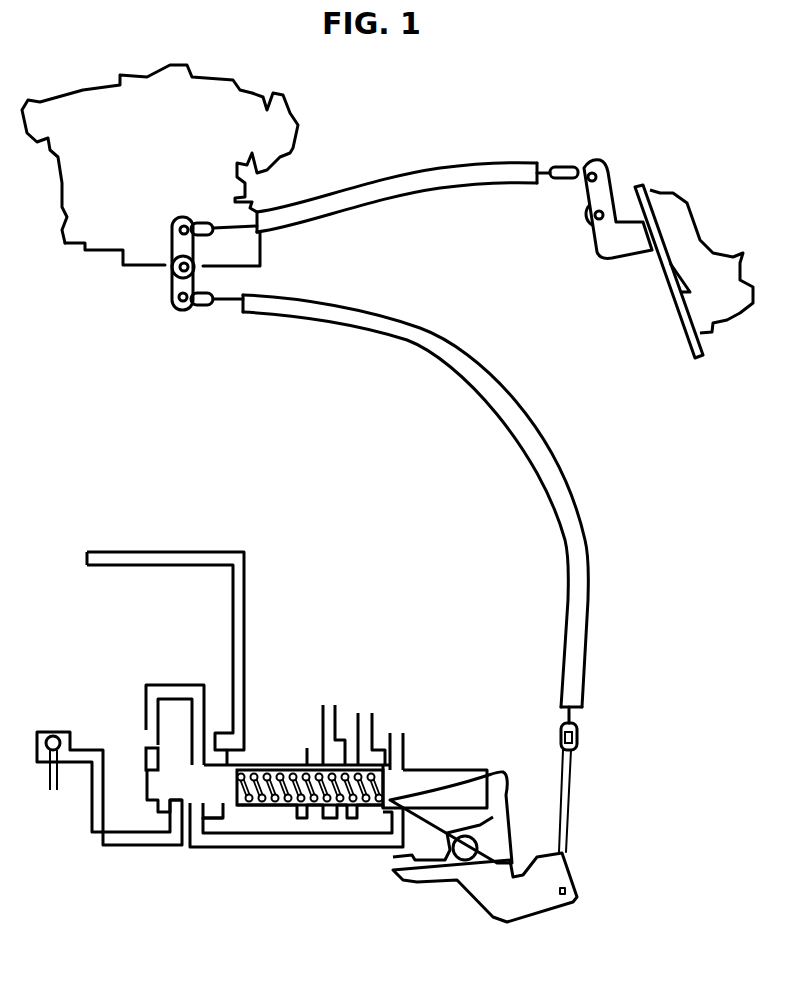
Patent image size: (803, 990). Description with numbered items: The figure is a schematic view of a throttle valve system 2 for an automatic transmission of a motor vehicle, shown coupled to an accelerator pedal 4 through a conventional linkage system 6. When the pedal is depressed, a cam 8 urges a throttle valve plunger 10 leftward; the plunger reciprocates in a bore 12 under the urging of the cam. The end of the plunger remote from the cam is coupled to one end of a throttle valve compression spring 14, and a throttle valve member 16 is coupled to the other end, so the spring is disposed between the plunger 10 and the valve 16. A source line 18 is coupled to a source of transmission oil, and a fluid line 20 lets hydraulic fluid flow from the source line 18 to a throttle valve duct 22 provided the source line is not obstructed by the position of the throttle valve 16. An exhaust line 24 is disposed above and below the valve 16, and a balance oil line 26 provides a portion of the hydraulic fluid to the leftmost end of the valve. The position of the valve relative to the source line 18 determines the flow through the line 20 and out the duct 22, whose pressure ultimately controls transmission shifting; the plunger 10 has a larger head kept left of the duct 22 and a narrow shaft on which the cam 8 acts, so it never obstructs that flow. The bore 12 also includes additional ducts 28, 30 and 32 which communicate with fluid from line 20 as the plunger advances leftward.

The throttle valve system 2 is at (289, 680).
The accelerator pedal 4 is at (678, 312).
The linkage system 6 is at (413, 195).
The cam 8 is at (435, 882).
The throttle valve plunger 10 is at (442, 770).
The bore 12 is at (367, 810).
The throttle valve compression spring 14 is at (287, 807).
The throttle valve member 16 is at (243, 810).
The source line 18 is at (193, 550).
The fluid line 20 is at (288, 847).
The throttle valve duct 22 is at (403, 740).
The exhaust line 24 is at (207, 710).
The balance oil line 26 is at (143, 757).
The duct 28 is at (370, 712).
The duct 30 is at (330, 705).
The duct 32 is at (300, 763).